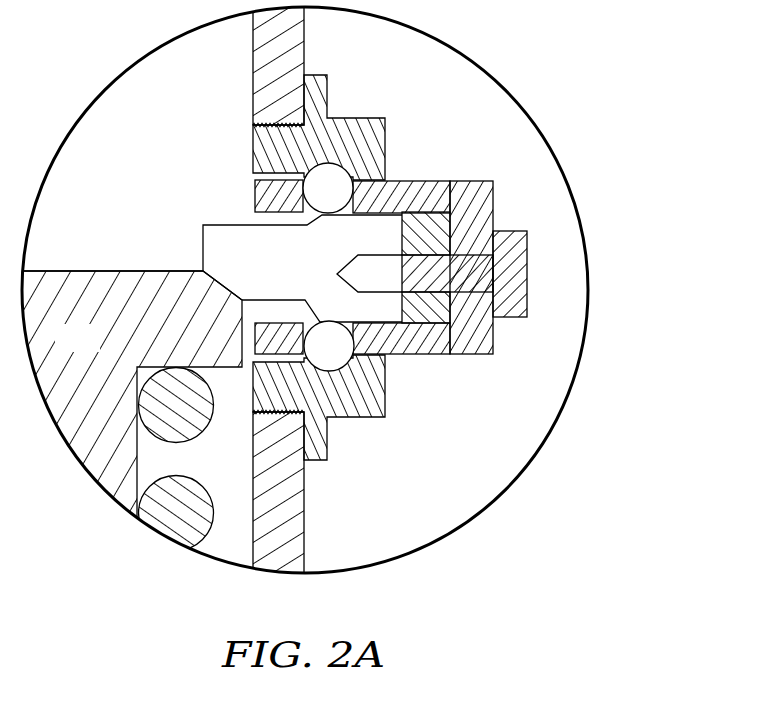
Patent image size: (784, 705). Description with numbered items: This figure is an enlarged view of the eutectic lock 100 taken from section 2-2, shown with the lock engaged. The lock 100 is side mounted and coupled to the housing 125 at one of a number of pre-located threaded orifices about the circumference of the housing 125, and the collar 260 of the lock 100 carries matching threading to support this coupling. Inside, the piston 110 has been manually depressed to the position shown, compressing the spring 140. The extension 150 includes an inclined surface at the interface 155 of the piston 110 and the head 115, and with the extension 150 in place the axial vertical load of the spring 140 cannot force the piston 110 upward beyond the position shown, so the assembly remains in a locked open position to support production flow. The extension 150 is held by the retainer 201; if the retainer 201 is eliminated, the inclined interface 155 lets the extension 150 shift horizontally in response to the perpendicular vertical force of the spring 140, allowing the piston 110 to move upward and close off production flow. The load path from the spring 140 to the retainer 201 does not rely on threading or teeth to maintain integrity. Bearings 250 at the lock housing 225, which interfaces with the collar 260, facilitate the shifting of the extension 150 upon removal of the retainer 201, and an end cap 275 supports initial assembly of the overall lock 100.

The lock 100 is at (452, 87).
The piston 110 is at (97, 350).
The head 115 is at (100, 285).
The housing 125 is at (263, 68).
The spring 140 is at (163, 423).
The extension 150 is at (293, 270).
The interface 155 is at (196, 262).
The retainer 201 is at (427, 313).
The lock housing 225 is at (412, 190).
The bearings 250 is at (337, 353).
The collar 260 is at (342, 412).
The end cap 275 is at (520, 273).
The section line 2-2 is at (517, 478).